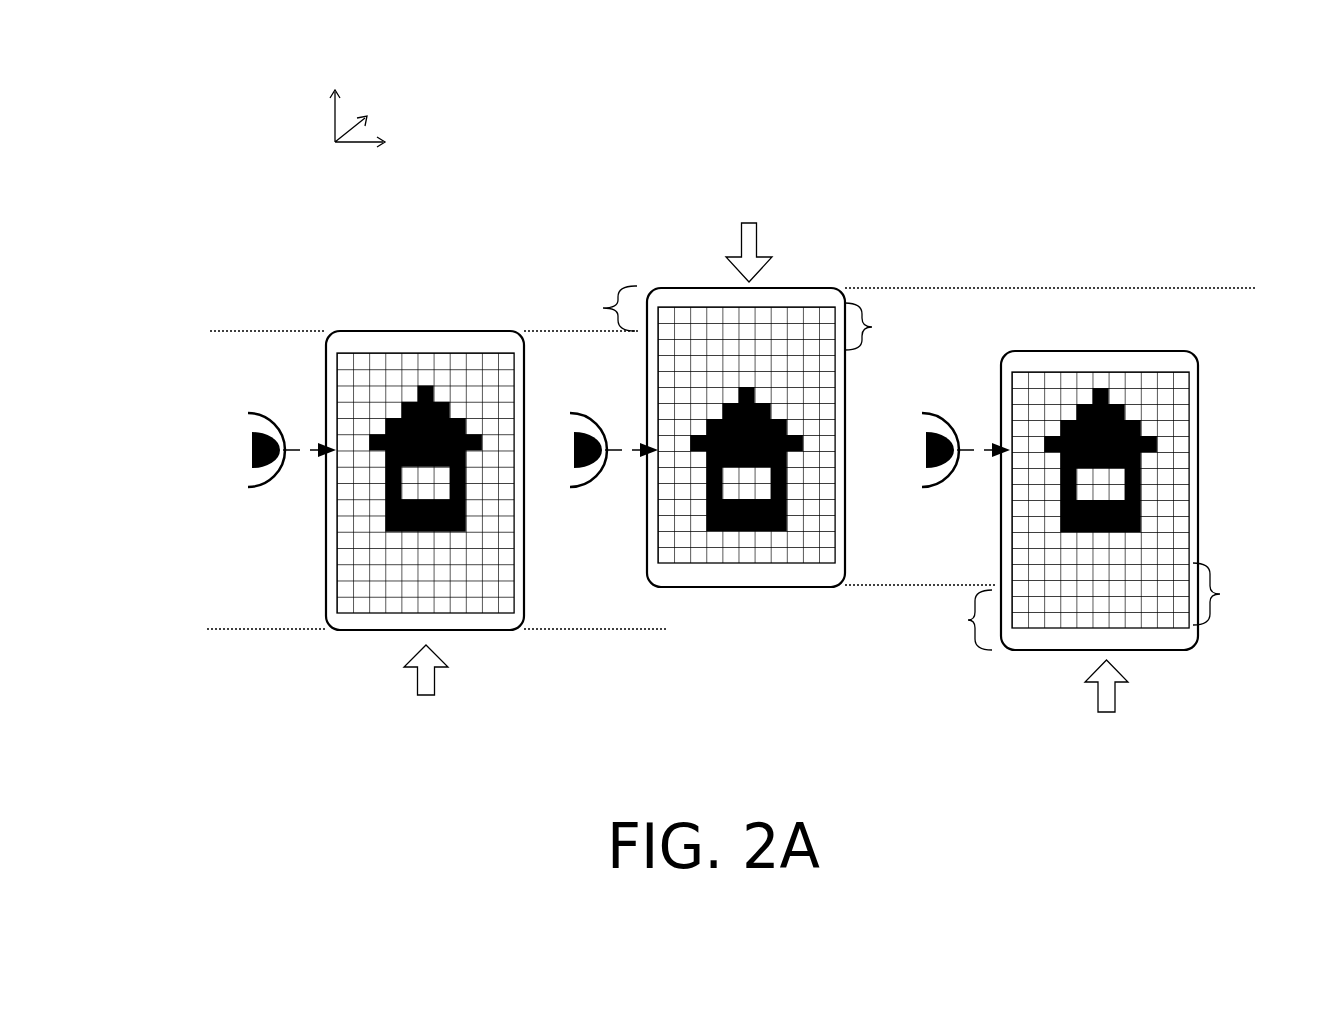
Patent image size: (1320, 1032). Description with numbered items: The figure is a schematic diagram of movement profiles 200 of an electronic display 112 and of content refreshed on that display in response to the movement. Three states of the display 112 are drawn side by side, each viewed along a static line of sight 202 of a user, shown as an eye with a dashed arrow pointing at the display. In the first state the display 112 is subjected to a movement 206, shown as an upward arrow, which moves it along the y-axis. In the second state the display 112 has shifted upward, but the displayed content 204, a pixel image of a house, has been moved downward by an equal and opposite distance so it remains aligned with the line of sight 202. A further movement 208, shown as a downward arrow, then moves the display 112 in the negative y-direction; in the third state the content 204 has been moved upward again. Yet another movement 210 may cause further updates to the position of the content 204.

The movement profiles 200 is at (203, 120).
The electronic display 112 is at (373, 354).
The displayed content 204 is at (433, 386).
The line of sight 202 is at (297, 449).
The movement M1 206 is at (394, 701).
The movement M2 208 is at (709, 189).
The movement M3 210 is at (1076, 734).